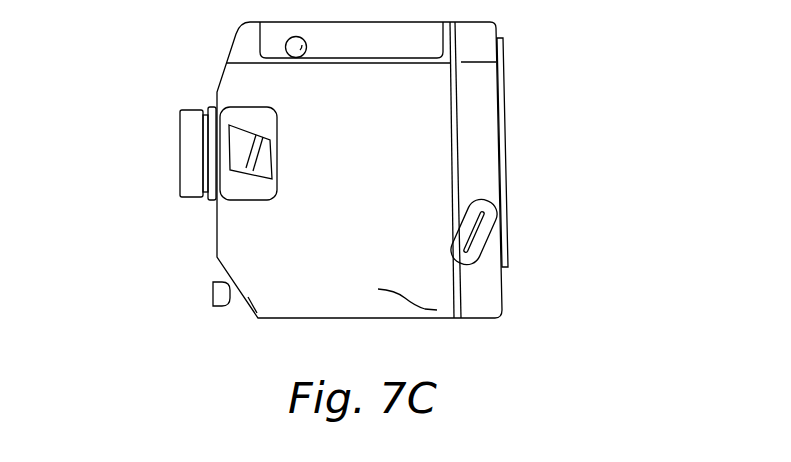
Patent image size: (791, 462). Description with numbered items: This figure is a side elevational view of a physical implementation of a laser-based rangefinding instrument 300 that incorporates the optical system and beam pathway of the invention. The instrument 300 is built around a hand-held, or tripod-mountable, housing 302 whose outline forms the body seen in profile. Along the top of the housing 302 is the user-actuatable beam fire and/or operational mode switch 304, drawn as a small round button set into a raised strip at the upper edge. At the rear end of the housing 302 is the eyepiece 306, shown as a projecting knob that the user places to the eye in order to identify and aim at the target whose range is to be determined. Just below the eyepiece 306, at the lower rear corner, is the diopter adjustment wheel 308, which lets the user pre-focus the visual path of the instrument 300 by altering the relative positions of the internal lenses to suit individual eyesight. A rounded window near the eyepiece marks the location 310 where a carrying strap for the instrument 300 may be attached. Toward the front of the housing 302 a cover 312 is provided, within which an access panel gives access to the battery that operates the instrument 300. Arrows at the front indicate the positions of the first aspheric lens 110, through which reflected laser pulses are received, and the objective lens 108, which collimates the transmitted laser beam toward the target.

The laser-based rangefinding instrument 300 is at (530, 391).
The housing 302 is at (413, 22).
The beam fire and/or operational mode switch 304 is at (297, 37).
The eyepiece 306 is at (132, 156).
The diopter adjustment wheel 308 is at (213, 291).
The carrying strap attachment location 310 is at (247, 151).
The cover 312 is at (498, 32).
The first aspheric lens 110 is at (550, 90).
The objective lens 108 is at (556, 207).